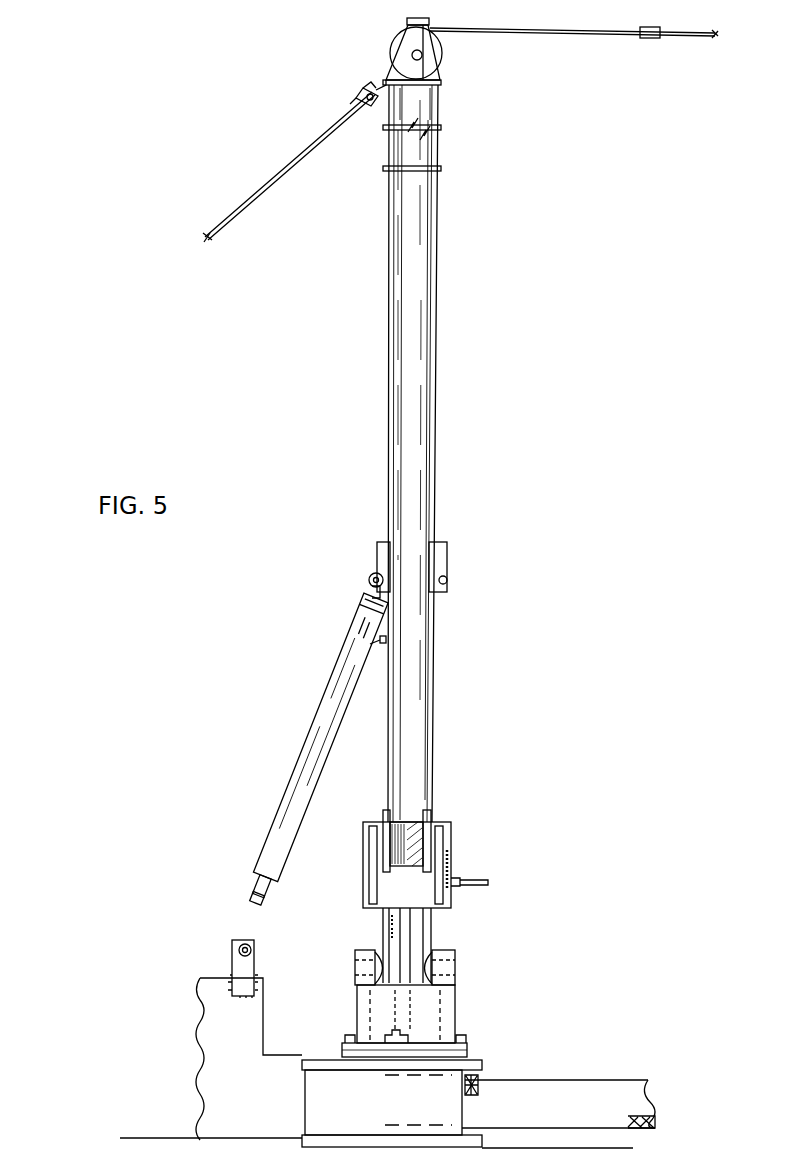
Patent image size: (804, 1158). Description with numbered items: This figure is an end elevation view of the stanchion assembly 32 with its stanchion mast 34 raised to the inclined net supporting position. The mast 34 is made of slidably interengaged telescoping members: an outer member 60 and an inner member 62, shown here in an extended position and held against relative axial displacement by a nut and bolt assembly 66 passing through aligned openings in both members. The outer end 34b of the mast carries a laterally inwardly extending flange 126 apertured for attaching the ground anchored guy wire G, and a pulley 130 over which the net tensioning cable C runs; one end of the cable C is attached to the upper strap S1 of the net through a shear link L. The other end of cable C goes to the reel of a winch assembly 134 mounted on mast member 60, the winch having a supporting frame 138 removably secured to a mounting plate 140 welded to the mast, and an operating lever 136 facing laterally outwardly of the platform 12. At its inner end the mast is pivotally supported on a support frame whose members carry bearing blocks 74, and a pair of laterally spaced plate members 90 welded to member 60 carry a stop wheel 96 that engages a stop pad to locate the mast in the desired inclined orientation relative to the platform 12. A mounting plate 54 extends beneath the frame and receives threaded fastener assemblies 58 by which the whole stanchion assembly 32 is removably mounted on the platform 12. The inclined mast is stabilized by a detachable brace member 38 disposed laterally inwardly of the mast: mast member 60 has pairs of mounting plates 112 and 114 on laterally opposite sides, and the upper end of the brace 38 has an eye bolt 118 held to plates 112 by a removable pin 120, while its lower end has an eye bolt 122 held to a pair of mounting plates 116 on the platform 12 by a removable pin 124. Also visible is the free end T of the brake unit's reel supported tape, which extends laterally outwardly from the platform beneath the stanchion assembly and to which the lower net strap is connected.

The platform 12 is at (212, 1020).
The stanchion assembly 32 is at (530, 910).
The stanchion mast 34 is at (441, 370).
The outer end 34b is at (438, 100).
The brace member 38 is at (326, 746).
The mounting plate 54 is at (470, 1052).
The threaded fastener assemblies 58 is at (466, 1040).
The outer member 60 is at (436, 452).
The inner member 62 is at (430, 115).
The nut and bolt assembly 66 is at (368, 644).
The bearing blocks 74 is at (360, 950).
The plate members 90 is at (400, 942).
The stop wheel 96 is at (405, 1020).
The mounting plates 112 is at (372, 548).
The mounting plates 114 is at (448, 558).
The mounting plates 116 is at (232, 968).
The eye bolt 118 is at (368, 583).
The removable pin 120 is at (369, 575).
The eye bolt 122 is at (238, 934).
The removable pin 124 is at (255, 955).
The flange 126 is at (378, 85).
The pulley 130 is at (442, 50).
The winch assembly 134 is at (434, 806).
The operating lever 136 is at (470, 890).
The supporting frame 138 is at (368, 846).
The mounting plate 140 is at (366, 878).
The net tensioning cable C is at (610, 33).
The guy wire G is at (258, 202).
The shear link L is at (653, 38).
The upper strap S1 is at (676, 24).
The free end T is at (612, 1084).